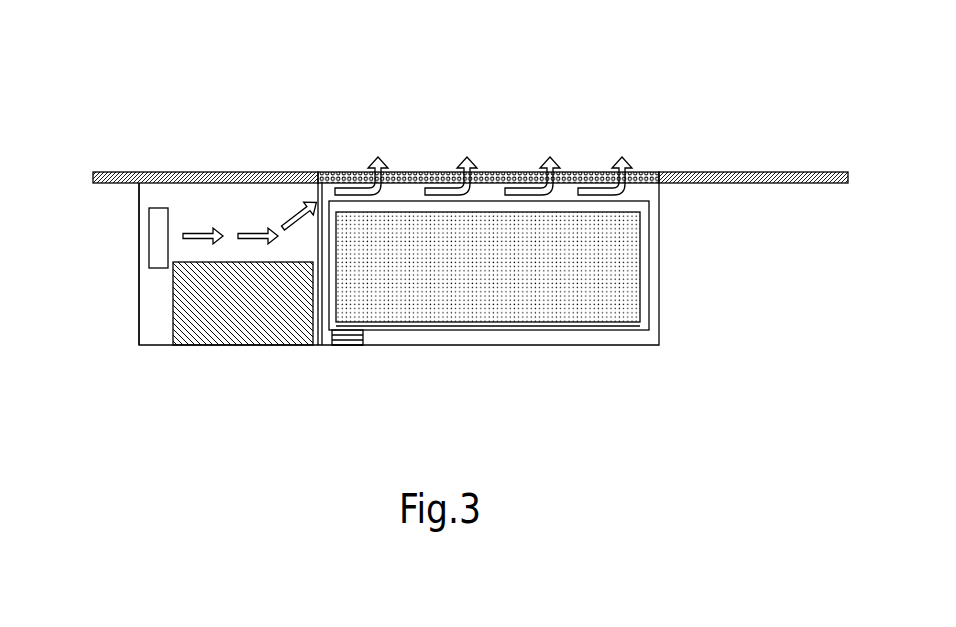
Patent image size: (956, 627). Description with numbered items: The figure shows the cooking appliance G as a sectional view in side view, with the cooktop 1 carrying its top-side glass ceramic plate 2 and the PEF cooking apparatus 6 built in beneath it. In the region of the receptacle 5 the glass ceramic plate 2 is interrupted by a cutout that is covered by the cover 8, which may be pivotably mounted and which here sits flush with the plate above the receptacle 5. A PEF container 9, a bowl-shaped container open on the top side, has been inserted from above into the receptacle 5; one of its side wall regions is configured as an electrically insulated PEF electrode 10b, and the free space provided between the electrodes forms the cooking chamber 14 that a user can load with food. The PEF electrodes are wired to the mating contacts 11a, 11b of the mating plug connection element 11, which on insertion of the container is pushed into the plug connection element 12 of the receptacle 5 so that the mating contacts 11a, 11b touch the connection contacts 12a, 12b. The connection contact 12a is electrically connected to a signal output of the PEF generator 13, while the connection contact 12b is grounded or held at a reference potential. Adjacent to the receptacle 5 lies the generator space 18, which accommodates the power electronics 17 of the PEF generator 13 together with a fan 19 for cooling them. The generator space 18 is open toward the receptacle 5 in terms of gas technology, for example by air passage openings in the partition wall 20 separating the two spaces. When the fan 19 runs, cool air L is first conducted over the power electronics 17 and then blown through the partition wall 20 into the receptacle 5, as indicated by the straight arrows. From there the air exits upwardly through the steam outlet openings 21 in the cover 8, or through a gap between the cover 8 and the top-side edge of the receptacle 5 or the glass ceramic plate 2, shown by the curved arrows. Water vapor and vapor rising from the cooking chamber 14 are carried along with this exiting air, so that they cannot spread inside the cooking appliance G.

The cooktop 1 is at (459, 226).
The cooking appliance G is at (228, 95).
The glass ceramic plate 2 is at (103, 172).
The receptacle 5 is at (659, 308).
The PEF cooking apparatus 6 is at (750, 377).
The cover 8 is at (420, 172).
The PEF container 9 is at (650, 247).
The PEF electrode 10b is at (570, 310).
The mating plug connection element 11 is at (361, 396).
The mating contact 11a is at (361, 396).
The mating contact 11b is at (343, 345).
The plug connection element 12 is at (406, 368).
The connection contact 12a is at (406, 368).
The connection contact 12b is at (360, 345).
The PEF generator 13 is at (243, 332).
The power electronics 17 is at (227, 338).
The cooking chamber 14 is at (522, 326).
The generator space 18 is at (139, 293).
The fan 19 is at (149, 235).
The partition wall 20 is at (316, 192).
The steam outlet openings 21 is at (373, 165).
The cool air L is at (200, 230).